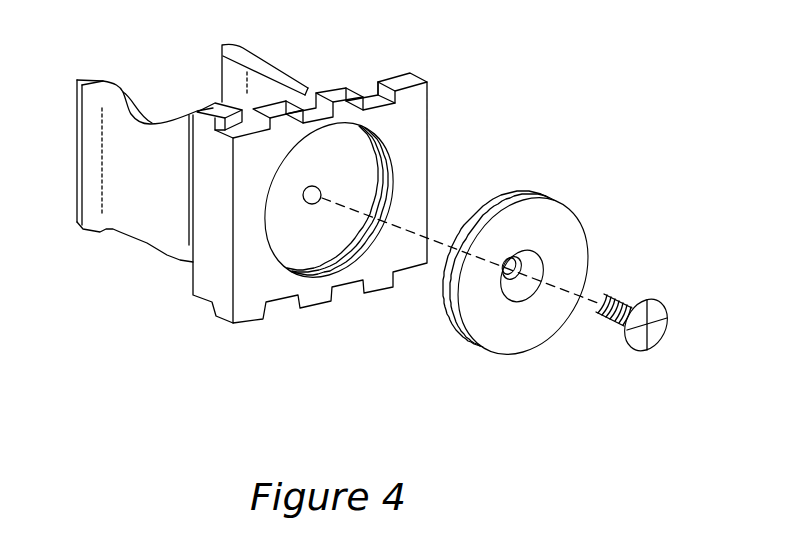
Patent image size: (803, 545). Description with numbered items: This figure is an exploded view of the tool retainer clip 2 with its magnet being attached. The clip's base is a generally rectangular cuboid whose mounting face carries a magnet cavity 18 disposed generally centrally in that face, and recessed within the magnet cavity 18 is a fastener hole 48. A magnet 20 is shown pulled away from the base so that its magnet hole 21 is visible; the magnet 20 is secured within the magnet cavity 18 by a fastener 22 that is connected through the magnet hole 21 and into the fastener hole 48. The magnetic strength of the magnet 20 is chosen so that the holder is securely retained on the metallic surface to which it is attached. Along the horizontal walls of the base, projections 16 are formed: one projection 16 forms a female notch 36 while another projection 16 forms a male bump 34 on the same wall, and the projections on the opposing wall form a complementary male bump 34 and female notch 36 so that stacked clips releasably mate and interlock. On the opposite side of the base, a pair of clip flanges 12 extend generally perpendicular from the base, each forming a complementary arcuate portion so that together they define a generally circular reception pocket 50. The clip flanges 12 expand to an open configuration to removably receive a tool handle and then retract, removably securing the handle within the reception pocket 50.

The tool retainer clip 2 is at (537, 163).
The clip flange 12 is at (153, 223).
The projection 16 is at (213, 108).
The magnet cavity 18 is at (393, 172).
The magnet 20 is at (558, 240).
The magnet hole 21 is at (543, 267).
The fastener 22 is at (648, 298).
The male bump 34 is at (392, 93).
The female notch 36 is at (252, 124).
The fastener hole 48 is at (312, 204).
The reception pocket 50 is at (176, 102).